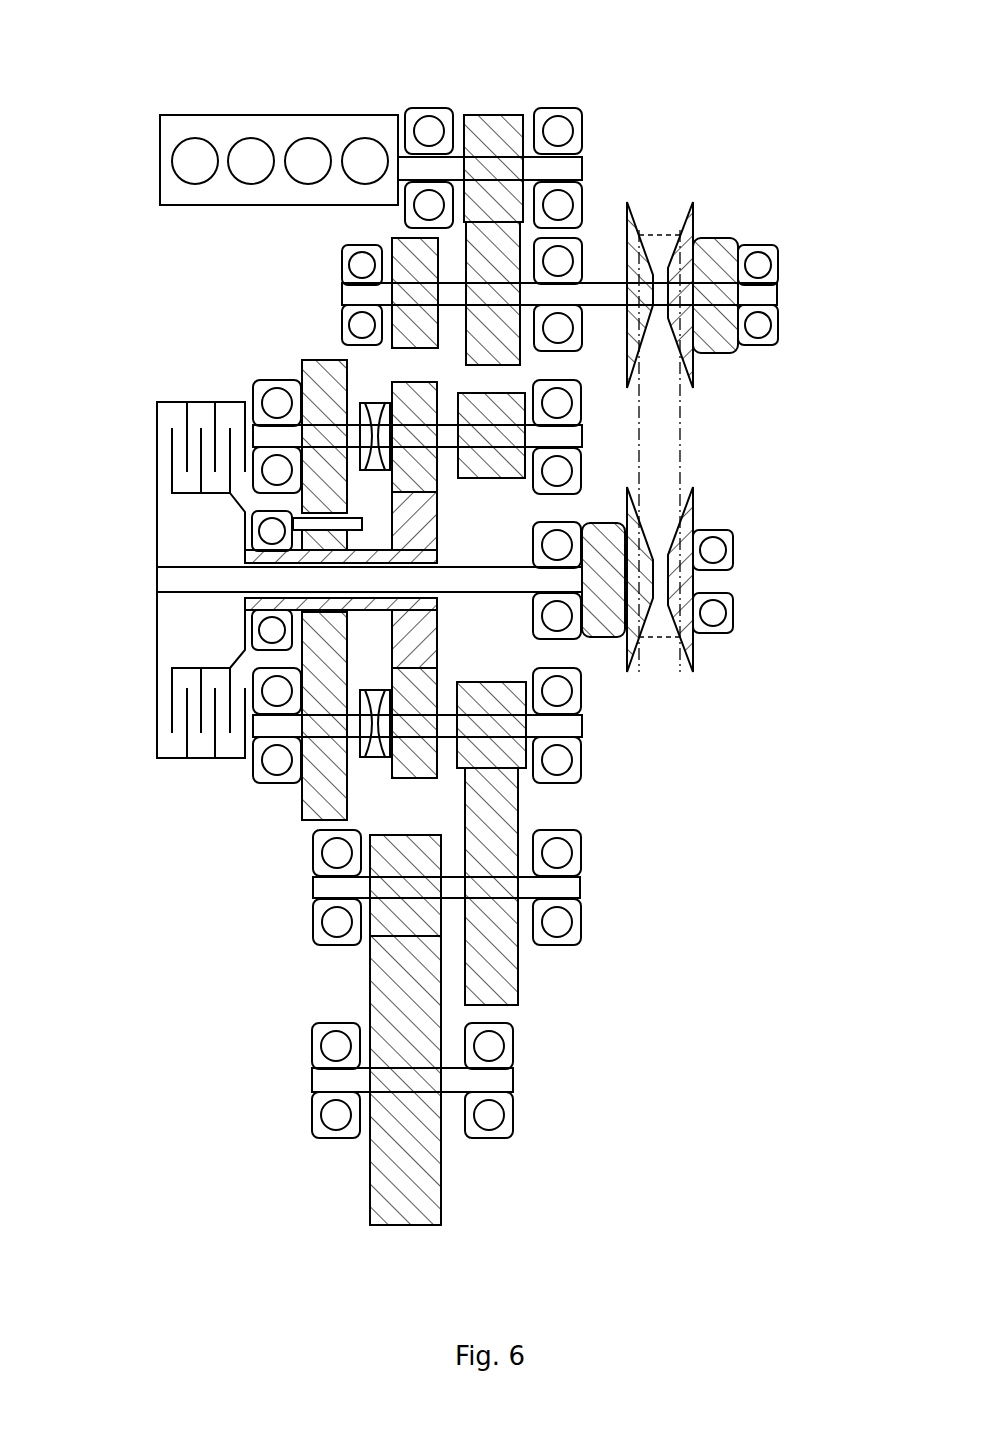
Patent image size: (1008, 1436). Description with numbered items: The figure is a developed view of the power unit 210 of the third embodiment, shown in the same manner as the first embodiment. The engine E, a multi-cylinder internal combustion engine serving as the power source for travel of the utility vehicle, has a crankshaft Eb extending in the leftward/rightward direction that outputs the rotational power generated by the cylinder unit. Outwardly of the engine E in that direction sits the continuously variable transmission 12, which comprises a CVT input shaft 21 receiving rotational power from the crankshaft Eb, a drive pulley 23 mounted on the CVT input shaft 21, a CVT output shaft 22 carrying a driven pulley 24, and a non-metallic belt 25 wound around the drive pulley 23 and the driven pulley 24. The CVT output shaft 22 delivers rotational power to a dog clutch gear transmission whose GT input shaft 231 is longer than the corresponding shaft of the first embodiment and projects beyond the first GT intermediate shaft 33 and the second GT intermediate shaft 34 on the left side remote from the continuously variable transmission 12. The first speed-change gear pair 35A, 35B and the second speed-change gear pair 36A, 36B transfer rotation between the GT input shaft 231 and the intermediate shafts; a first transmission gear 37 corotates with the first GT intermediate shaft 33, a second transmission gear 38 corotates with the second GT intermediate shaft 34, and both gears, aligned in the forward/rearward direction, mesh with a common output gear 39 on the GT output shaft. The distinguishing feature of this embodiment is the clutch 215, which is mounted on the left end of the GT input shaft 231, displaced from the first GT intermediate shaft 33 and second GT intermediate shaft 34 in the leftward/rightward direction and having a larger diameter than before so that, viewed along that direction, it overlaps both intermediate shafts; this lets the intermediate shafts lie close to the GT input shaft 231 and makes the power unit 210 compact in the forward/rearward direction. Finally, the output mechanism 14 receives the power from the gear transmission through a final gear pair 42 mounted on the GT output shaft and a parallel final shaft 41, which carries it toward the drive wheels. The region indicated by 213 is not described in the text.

The engine E is at (186, 113).
The crankshaft Eb is at (573, 170).
The power unit 210 is at (461, 612).
The continuously variable transmission 12 is at (608, 466).
The drive pulley 23 is at (692, 207).
The CVT input shaft 21 is at (772, 295).
The belt 25 is at (680, 450).
The driven pulley 24 is at (688, 672).
The CVT output shaft 22 is at (723, 582).
The electric motor unit 213 is at (411, 639).
The clutch 215 is at (157, 522).
The GT input shaft 231 is at (160, 582).
The first GT intermediate shaft 33 is at (270, 433).
The first speed-change gear pair 35B is at (315, 360).
The first speed-change gear pair 35A is at (437, 518).
The first transmission gear 37 is at (510, 410).
The second GT intermediate shaft 34 is at (275, 723).
The second speed-change gear pair 36B is at (307, 795).
The second speed-change gear pair 36A is at (437, 628).
The second transmission gear 38 is at (507, 747).
The common output gear 39 is at (510, 970).
The output mechanism 14 is at (399, 1027).
The final gear pair 42 is at (368, 1170).
The final shaft 41 is at (503, 1080).